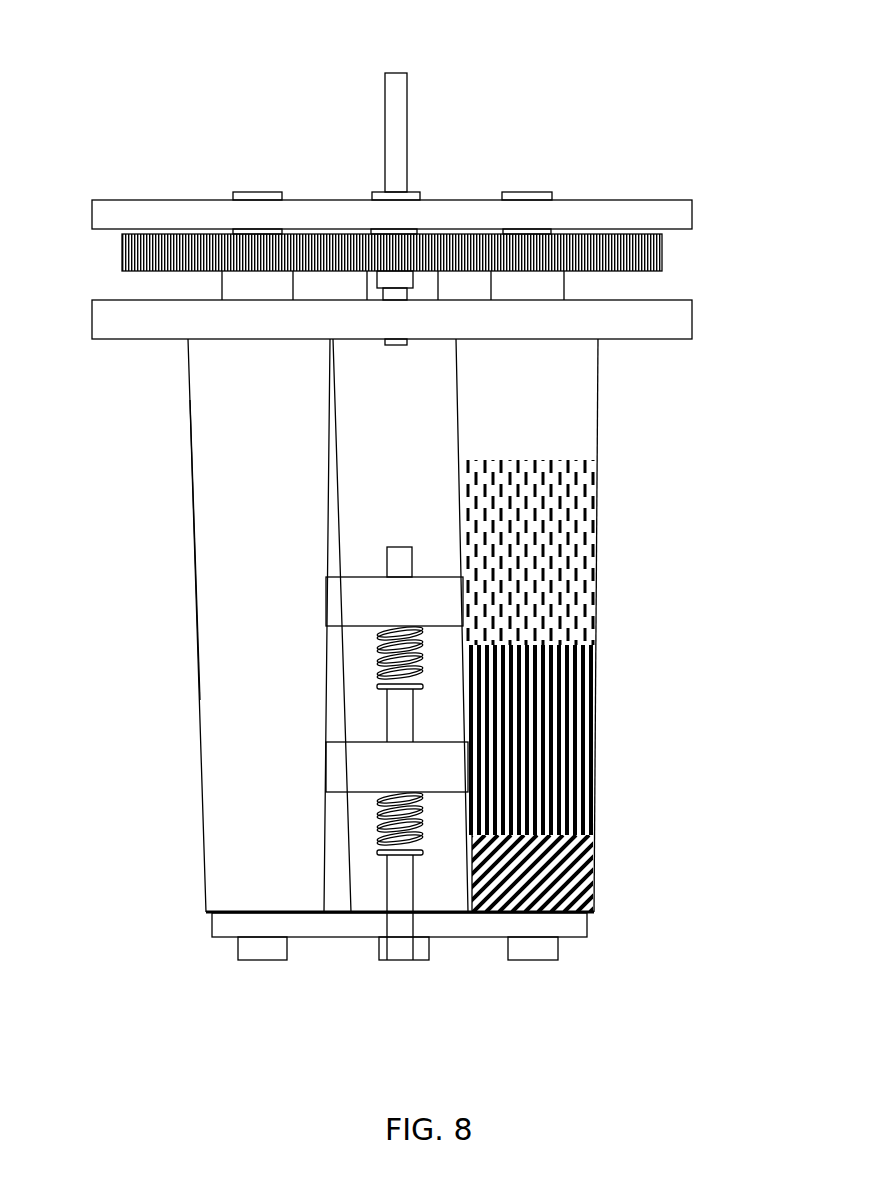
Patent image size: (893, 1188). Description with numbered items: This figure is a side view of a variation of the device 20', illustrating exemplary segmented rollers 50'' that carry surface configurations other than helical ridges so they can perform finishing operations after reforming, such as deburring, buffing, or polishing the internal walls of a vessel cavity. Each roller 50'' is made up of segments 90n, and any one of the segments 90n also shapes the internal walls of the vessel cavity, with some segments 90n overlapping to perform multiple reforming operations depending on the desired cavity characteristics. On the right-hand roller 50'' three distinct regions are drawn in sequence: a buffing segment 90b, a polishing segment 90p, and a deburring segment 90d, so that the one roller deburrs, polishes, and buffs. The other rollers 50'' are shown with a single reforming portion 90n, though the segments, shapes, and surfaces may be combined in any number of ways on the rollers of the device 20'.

The device 20' is at (414, 495).
The roller 50'' is at (393, 649).
The segments 90n is at (161, 913).
The buffing segment 90b is at (686, 457).
The polishing segment 90p is at (671, 649).
The deburring segment 90d is at (650, 836).